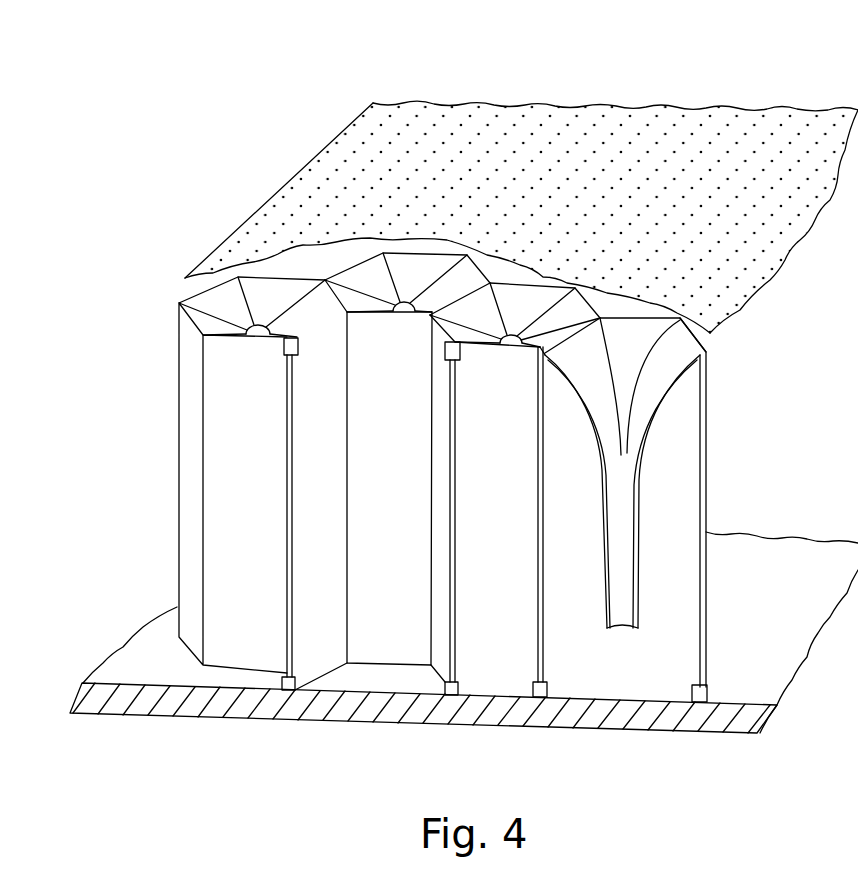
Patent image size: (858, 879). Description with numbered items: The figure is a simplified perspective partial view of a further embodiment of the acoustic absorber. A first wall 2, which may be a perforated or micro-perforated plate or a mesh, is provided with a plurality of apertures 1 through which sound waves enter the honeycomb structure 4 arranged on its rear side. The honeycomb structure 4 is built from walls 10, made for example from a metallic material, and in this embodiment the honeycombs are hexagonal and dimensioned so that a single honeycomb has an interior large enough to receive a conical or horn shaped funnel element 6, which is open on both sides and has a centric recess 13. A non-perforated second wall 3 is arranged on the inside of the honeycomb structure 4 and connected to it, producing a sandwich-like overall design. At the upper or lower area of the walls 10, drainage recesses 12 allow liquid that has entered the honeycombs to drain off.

The apertures 1 is at (467, 113).
The first wall 2 is at (582, 125).
The second wall 3 is at (167, 700).
The honeycomb structure 4 is at (318, 467).
The funnel element 6 is at (643, 510).
The walls 10 is at (706, 412).
The drainage recesses 12 is at (286, 340).
The centric recess 13 is at (620, 633).